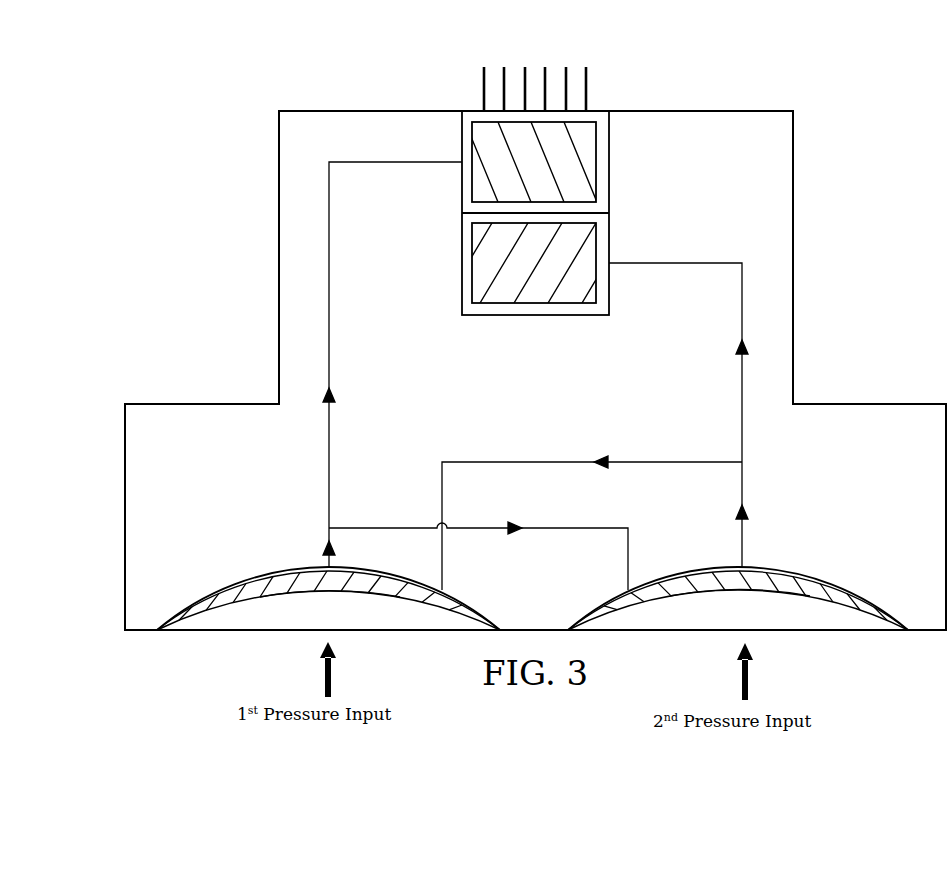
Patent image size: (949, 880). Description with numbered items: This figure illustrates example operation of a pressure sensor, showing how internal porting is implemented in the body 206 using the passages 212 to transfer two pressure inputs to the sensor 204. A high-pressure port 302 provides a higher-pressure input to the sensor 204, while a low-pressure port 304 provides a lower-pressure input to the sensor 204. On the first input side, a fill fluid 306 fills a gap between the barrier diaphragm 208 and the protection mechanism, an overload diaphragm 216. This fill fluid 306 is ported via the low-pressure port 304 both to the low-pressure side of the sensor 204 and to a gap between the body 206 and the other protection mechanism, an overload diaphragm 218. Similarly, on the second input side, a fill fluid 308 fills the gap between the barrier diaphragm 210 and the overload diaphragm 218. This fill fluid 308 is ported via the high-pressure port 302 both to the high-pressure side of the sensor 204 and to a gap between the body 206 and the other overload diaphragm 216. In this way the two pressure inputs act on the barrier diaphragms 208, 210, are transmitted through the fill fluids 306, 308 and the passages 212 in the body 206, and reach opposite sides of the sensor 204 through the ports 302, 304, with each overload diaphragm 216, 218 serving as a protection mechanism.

The sensor 204 is at (465, 90).
The body 206 is at (212, 403).
The barrier diaphragm 208 is at (310, 594).
The barrier diaphragm 210 is at (715, 592).
The passages 212 is at (298, 483).
The protection mechanism (overload diaphragm) 216 is at (292, 570).
The protection mechanism (overload diaphragm) 218 is at (765, 568).
The high-pressure port 302 is at (672, 262).
The low-pressure port 304 is at (331, 283).
The fill fluid 306 is at (348, 591).
The fill fluid 308 is at (778, 590).